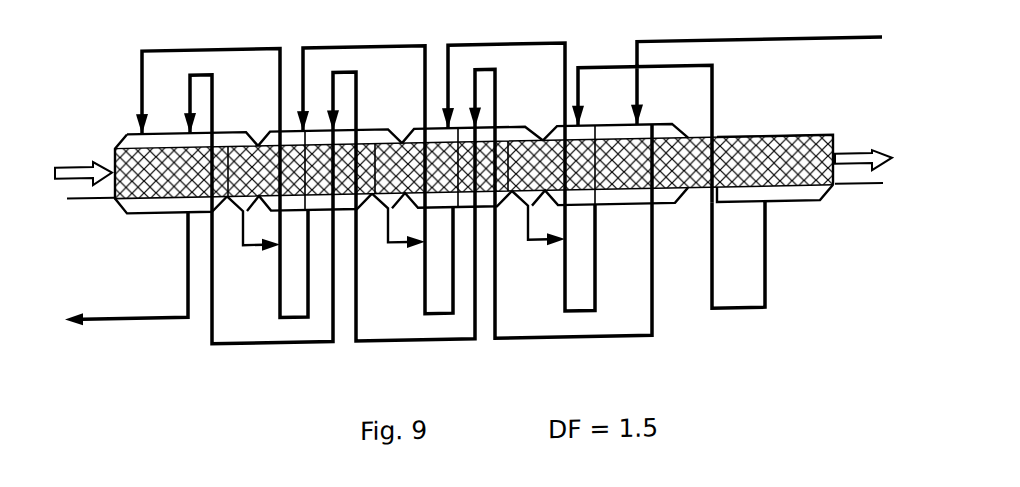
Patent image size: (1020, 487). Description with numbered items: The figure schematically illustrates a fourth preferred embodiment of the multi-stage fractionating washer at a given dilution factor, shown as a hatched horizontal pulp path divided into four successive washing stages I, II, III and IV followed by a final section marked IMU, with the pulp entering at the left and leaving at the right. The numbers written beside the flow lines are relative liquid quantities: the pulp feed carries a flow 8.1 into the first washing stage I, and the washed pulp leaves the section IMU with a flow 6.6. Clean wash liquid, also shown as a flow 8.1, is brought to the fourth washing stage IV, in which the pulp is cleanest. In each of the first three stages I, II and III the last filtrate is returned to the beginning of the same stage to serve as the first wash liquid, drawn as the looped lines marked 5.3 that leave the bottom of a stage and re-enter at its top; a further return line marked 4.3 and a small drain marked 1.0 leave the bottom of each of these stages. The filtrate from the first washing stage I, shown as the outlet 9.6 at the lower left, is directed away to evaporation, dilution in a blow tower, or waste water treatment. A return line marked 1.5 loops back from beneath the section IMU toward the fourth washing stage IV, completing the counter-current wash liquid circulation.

The first washing stage I is at (186, 173).
The second washing stage II is at (324, 170).
The third washing stage III is at (467, 167).
The fourth washing stage IV is at (610, 165).
The ion exchange / final treatment unit IMU is at (775, 168).
The recirculated wash water stream (5.3 units) 5.3 is at (394, 179).
The drain stream (1.0 units) 1.0 is at (391, 221).
The return stream (4.3 units) 4.3 is at (422, 261).
The waste water outlet (9.6 units) 9.6 is at (126, 268).
The feed streams M in and wash water WI (8.1 units) 8.1 is at (464, 113).
The return stream from IMU (1.5 units) 1.5 is at (754, 255).
The product outlet M out (6.6 units) 6.6 is at (863, 139).